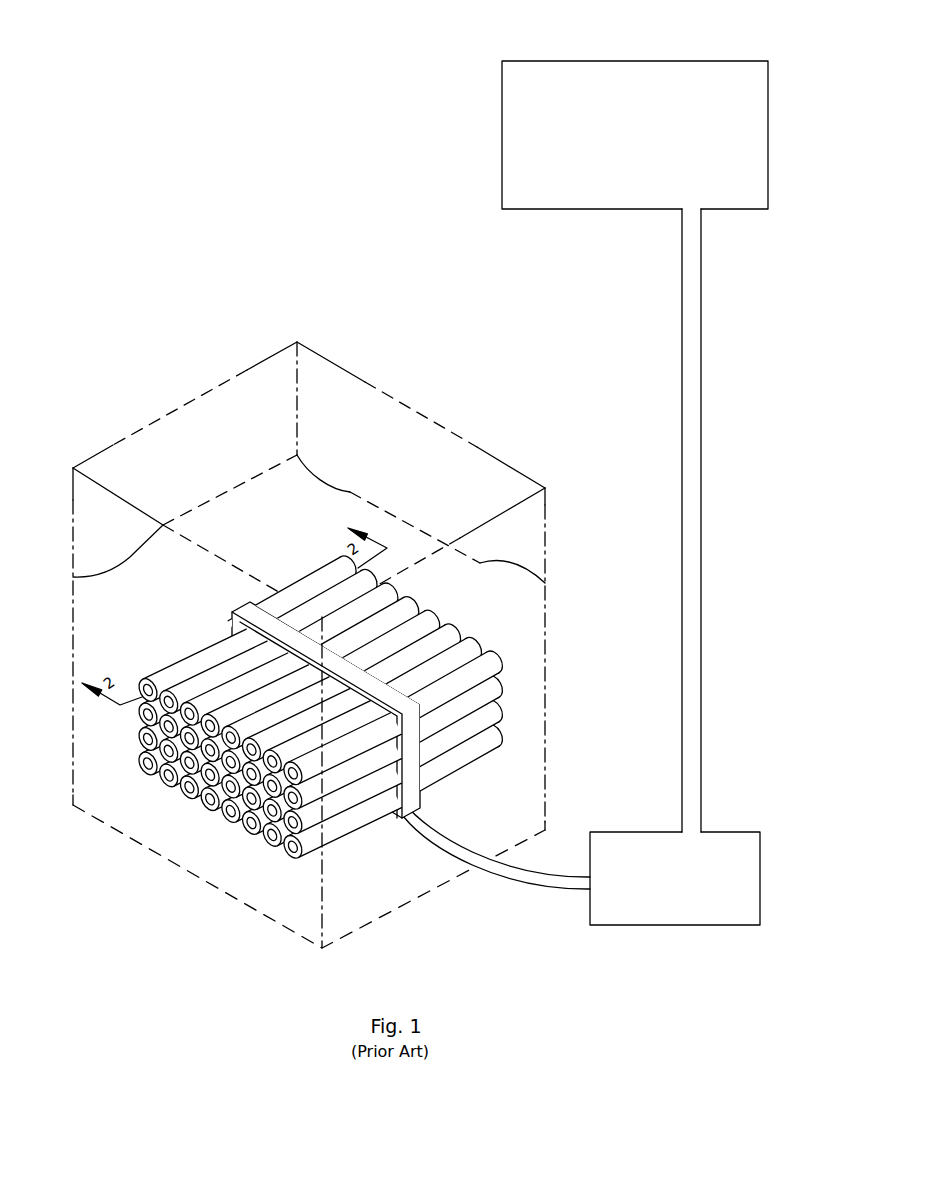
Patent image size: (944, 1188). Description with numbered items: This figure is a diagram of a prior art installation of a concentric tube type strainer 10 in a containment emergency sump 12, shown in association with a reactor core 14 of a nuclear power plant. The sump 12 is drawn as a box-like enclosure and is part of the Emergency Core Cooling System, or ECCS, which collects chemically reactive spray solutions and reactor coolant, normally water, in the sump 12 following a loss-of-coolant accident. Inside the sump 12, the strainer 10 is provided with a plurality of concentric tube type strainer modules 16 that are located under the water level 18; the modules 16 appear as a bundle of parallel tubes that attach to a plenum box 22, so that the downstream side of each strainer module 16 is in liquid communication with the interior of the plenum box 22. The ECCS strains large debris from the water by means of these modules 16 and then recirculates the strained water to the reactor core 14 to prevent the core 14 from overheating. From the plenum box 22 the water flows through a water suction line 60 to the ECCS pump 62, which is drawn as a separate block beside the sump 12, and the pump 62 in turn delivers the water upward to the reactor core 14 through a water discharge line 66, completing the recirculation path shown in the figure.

The concentric tube type strainer 10 is at (347, 708).
The containment emergency sump 12 is at (475, 447).
The reactor core 14 is at (502, 153).
The concentric tube type strainer modules 16 is at (397, 606).
The water level 18 is at (320, 477).
The plenum box 22 is at (245, 605).
The water suction line 60 is at (557, 888).
The ECCS pump 62 is at (702, 927).
The water discharge line 66 is at (701, 520).